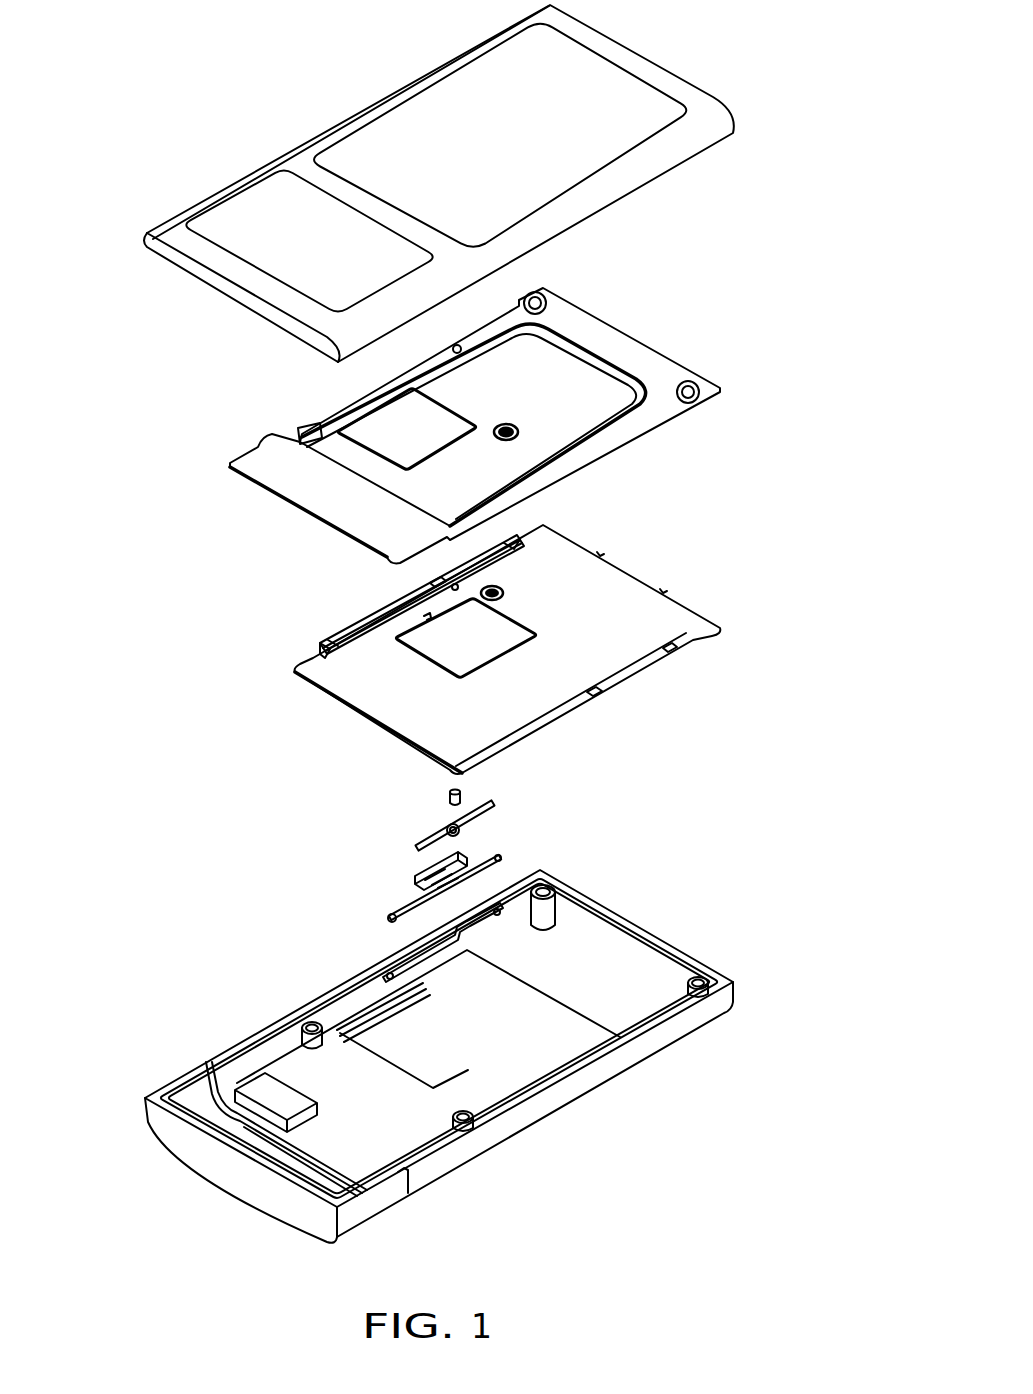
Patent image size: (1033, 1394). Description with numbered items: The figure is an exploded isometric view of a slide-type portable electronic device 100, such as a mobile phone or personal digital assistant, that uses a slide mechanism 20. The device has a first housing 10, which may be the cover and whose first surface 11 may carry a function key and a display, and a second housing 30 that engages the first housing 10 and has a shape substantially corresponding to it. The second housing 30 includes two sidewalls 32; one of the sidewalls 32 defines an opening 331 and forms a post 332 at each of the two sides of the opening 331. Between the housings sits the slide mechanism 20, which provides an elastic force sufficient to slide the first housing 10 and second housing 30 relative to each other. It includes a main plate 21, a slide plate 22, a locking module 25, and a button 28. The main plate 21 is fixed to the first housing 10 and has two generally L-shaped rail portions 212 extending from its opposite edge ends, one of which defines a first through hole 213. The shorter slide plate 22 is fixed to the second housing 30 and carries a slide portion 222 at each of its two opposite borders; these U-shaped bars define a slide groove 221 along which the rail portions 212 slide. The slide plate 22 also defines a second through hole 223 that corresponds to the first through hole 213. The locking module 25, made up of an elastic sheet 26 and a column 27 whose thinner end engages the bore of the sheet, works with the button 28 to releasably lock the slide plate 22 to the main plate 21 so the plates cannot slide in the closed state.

The portable electronic device 100 is at (165, 65).
The first housing 10 is at (338, 110).
The first surface 11 is at (307, 173).
The slide mechanism 20 is at (243, 920).
The main plate 21 is at (270, 503).
The rail portions 212 is at (318, 427).
The first through hole 213 is at (461, 346).
The slide plate 22 is at (305, 703).
The slide groove 221 is at (313, 663).
The slide portions 222 is at (365, 623).
The second through hole 223 is at (437, 584).
The locking module 25 is at (338, 775).
The elastic sheet 26 is at (447, 838).
The column 27 is at (450, 797).
The button 28 is at (397, 917).
The second housing 30 is at (683, 937).
The sidewalls 32 is at (263, 1030).
The opening 331 is at (495, 958).
The post 332 is at (503, 907).